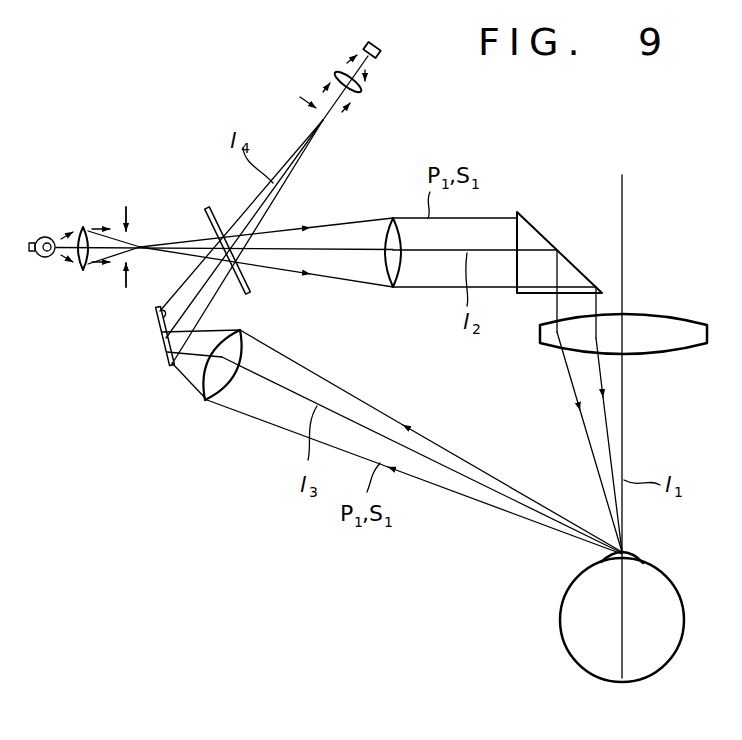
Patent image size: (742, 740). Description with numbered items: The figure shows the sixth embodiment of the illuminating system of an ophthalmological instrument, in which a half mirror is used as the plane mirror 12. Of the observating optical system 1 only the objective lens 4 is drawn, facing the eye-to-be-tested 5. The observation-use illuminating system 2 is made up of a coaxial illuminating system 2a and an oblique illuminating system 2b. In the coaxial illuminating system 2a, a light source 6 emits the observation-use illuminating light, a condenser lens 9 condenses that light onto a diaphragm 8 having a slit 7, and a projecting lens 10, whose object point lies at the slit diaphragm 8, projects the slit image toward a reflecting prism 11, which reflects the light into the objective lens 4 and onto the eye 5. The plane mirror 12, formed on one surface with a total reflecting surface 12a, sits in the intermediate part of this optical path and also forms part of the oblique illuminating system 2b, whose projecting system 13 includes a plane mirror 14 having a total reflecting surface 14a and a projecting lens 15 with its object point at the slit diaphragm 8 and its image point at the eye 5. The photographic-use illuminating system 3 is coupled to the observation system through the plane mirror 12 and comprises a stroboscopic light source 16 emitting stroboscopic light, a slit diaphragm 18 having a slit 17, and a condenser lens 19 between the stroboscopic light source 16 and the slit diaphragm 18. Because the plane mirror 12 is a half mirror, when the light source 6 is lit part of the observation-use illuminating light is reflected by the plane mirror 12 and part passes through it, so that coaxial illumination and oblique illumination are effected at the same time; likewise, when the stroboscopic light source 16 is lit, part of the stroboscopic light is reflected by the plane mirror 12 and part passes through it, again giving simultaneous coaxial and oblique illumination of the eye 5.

The observating optical system 1 is at (643, 434).
The observation-use illuminating system 2 is at (268, 498).
The coaxial illuminating system 2a is at (410, 303).
The oblique illuminating system 2b is at (243, 424).
The photographic-use illuminating system 3 is at (318, 77).
The objective lens 4 is at (683, 330).
The eye-to-be-tested 5 is at (686, 623).
The light source 6 is at (47, 237).
The slit 7 is at (120, 262).
The slit diaphragm 8 is at (128, 211).
The condenser lens 9 is at (84, 227).
The projecting lens 10 is at (389, 276).
The reflecting prism 11 is at (537, 232).
The plane mirror 12 is at (207, 205).
The total reflecting surface 12a is at (249, 292).
The projecting system 13 is at (170, 397).
The plane mirror 14 is at (153, 331).
The total reflecting surface 14a is at (158, 311).
The projecting lens 15 is at (210, 398).
The stroboscopic light source 16 is at (380, 53).
The slit 17 is at (328, 121).
The slit diaphragm 18 is at (335, 121).
The condenser lens 19 is at (363, 92).